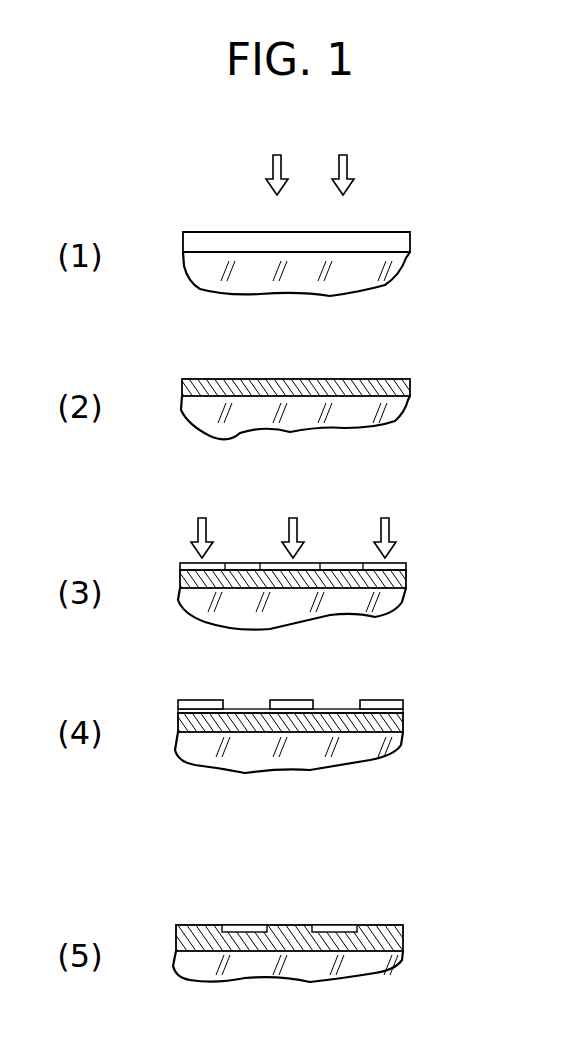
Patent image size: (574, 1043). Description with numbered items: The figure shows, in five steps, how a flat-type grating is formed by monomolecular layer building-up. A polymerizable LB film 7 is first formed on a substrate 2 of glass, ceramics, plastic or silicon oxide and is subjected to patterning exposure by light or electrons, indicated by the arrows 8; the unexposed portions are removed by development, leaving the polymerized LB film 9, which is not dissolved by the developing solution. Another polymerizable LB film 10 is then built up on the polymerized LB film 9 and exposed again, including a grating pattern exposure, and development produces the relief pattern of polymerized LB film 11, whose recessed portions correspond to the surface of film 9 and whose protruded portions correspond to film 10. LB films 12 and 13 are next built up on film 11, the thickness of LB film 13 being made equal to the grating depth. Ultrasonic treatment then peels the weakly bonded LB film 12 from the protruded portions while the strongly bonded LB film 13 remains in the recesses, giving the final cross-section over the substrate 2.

The substrate 2 is at (390, 266).
The polymerizable LB film 7 is at (390, 240).
The exposure light 8 is at (345, 166).
The polymerized LB film 9 is at (376, 388).
The polymerizable LB film 10 is at (397, 563).
The polymerized LB film 11 is at (398, 722).
The LB film 12 is at (378, 700).
The LB film 13 is at (338, 708).